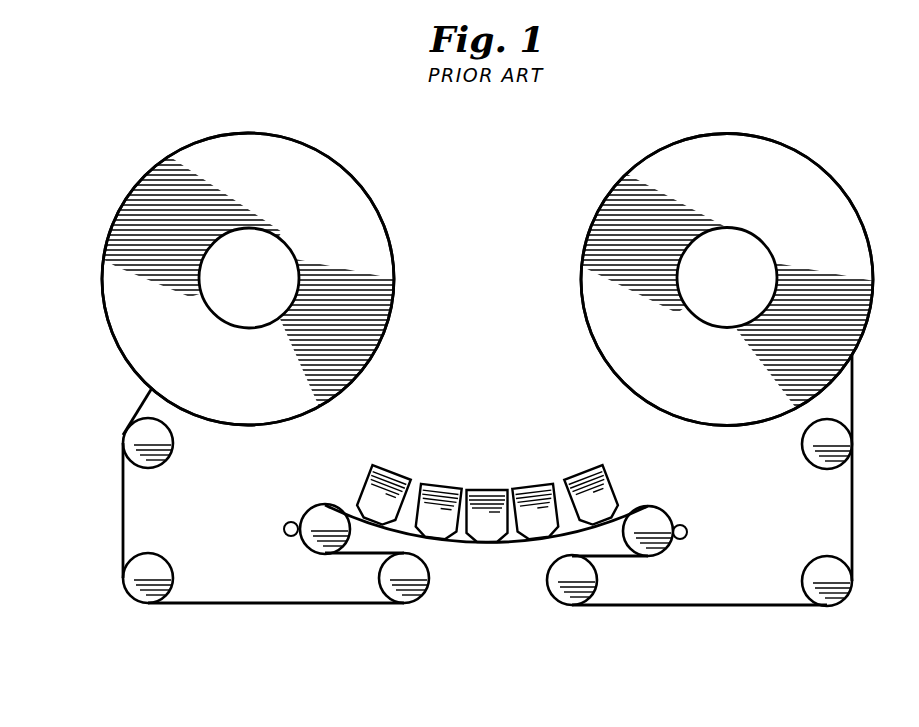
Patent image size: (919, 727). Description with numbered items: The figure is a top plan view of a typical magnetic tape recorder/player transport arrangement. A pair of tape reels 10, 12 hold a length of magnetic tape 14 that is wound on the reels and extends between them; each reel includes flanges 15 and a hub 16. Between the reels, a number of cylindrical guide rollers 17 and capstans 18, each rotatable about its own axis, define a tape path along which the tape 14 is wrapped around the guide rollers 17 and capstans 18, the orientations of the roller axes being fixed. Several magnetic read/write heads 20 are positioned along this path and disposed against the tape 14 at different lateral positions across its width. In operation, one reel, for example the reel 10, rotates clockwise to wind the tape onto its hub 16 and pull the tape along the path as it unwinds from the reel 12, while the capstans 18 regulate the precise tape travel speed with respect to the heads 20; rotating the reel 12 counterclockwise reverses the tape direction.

The tape reel 10 is at (361, 168).
The tape reel 12 is at (617, 168).
The magnetic tape 14 is at (700, 606).
The flanges 15 is at (385, 273).
The hub 16 is at (227, 313).
The guide rollers 17 is at (142, 432).
The capstans 18 is at (287, 523).
The magnetic read/write heads 20 is at (430, 487).